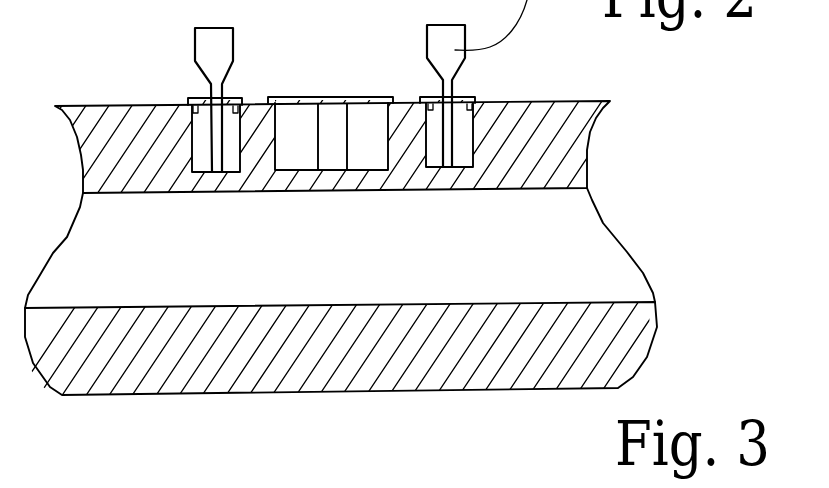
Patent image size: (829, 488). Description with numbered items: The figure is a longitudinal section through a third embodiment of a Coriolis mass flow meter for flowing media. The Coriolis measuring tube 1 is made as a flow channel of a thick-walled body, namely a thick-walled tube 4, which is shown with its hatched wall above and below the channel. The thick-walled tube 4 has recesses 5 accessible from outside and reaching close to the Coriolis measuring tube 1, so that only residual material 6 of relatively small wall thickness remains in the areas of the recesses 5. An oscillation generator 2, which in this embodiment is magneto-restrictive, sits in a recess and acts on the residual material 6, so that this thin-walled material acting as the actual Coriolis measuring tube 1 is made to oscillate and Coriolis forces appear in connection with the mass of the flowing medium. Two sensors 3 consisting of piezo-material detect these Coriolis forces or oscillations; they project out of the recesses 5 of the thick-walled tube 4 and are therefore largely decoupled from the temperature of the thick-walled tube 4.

The Coriolis measuring tube 1 is at (515, 302).
The oscillation generator 2 is at (300, 133).
The sensor 3 is at (203, 58).
The thick-walled tube 4 is at (552, 155).
The recess 5 is at (240, 146).
The residual material 6 is at (258, 182).